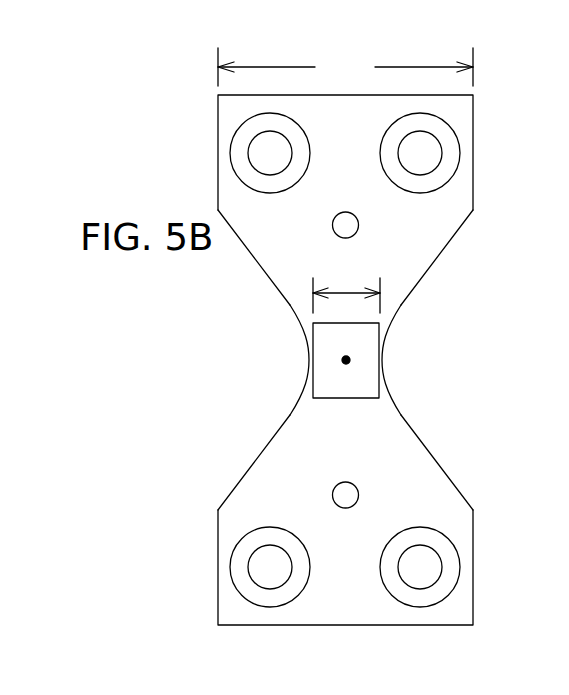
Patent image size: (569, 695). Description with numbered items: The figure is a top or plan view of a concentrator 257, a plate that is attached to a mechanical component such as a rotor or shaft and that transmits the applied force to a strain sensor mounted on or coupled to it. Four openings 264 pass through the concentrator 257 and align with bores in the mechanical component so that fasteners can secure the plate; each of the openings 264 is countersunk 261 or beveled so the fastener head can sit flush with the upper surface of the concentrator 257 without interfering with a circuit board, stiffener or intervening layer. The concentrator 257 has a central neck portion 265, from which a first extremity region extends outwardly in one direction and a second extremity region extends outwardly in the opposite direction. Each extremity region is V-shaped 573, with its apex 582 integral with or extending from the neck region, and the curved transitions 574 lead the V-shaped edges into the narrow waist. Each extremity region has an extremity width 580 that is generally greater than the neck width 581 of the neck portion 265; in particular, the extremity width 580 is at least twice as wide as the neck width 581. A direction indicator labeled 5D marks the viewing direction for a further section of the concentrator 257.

The concentrator 257 is at (225, 37).
The openings 264 is at (283, 170).
The countersunk 261 is at (283, 180).
The V-shaped 573 is at (272, 282).
The curved waist edge 574 is at (308, 360).
The central neck portion 265 is at (293, 343).
The extremity width 580 is at (345, 67).
The neck width 581 is at (345, 288).
The apex 582 is at (346, 364).
The section view direction 5D is at (555, 342).